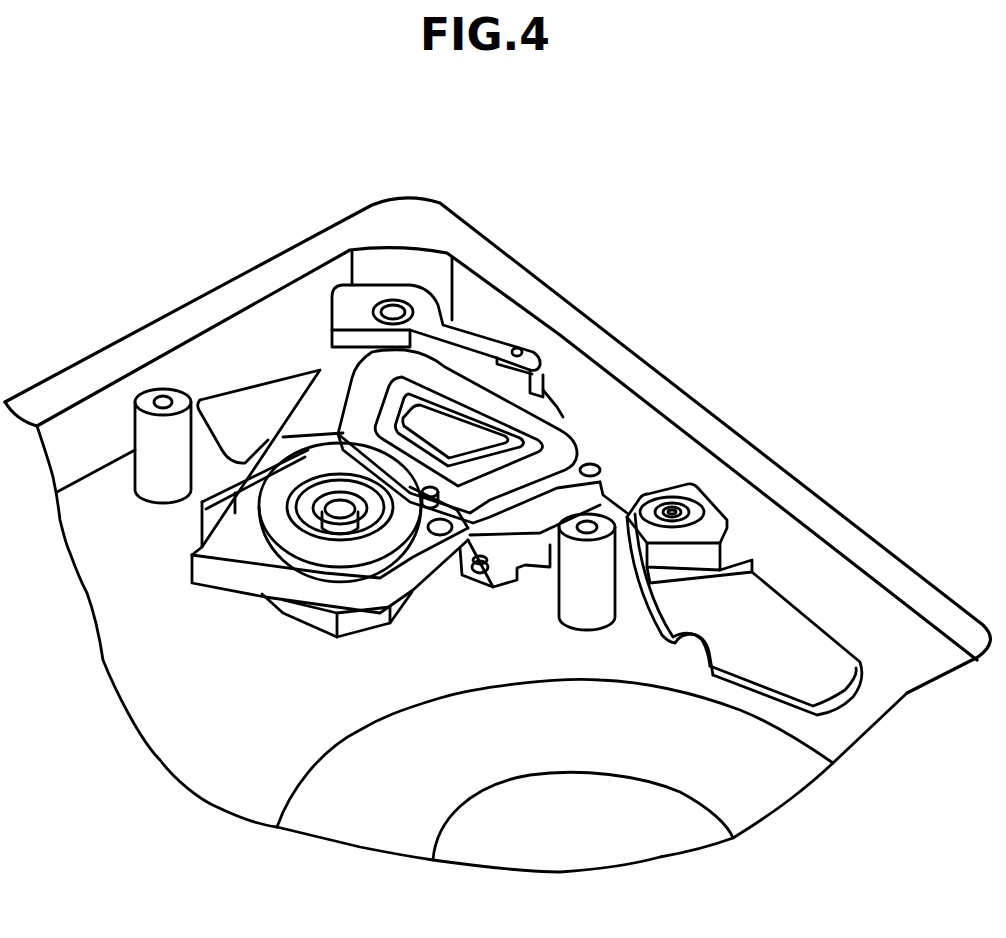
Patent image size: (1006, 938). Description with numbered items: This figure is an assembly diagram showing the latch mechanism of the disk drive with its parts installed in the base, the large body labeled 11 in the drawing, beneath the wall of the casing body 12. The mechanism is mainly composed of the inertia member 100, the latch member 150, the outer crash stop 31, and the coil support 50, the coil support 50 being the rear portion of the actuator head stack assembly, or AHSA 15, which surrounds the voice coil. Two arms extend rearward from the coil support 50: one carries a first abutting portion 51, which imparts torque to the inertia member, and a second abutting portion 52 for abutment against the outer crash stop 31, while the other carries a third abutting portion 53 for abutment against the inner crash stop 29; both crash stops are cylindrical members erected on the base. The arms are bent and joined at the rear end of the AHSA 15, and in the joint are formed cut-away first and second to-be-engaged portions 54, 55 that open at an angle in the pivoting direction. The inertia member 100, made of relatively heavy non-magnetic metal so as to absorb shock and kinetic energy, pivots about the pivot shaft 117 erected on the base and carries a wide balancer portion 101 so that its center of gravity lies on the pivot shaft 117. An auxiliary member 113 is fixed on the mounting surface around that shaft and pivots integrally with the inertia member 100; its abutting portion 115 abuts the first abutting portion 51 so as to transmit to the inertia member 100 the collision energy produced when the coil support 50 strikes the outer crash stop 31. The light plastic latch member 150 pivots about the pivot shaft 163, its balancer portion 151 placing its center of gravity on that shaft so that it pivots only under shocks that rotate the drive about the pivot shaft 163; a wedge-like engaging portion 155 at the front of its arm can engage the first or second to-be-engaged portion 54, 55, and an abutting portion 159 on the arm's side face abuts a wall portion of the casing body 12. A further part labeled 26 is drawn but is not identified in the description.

The vehicle body 11 is at (370, 827).
The casing body 12 is at (838, 517).
The AHSA 15 is at (208, 600).
The mounting plate 26 is at (259, 458).
The inner crash stop 29 is at (147, 460).
The outer crash stop 31 is at (573, 583).
The coil support 50 is at (467, 520).
The first abutting portion 51 is at (598, 465).
The second abutting portion 52 is at (540, 515).
The abutting portion 53 is at (292, 406).
The first to-be-engaged portion 54 is at (540, 372).
The second to-be-engaged portion 55 is at (557, 408).
The inertia member 100 is at (650, 639).
The balancer portion 101 is at (817, 647).
The auxiliary member 113 is at (722, 512).
The abutting portion 115 is at (665, 486).
The pivot shaft 117 is at (674, 513).
The latch member 150 is at (318, 305).
The balancer portion 151 is at (345, 300).
The wedge-like engaging portion 155 is at (543, 365).
The abutting portion 159 is at (540, 360).
The pivot shaft 163 is at (391, 307).